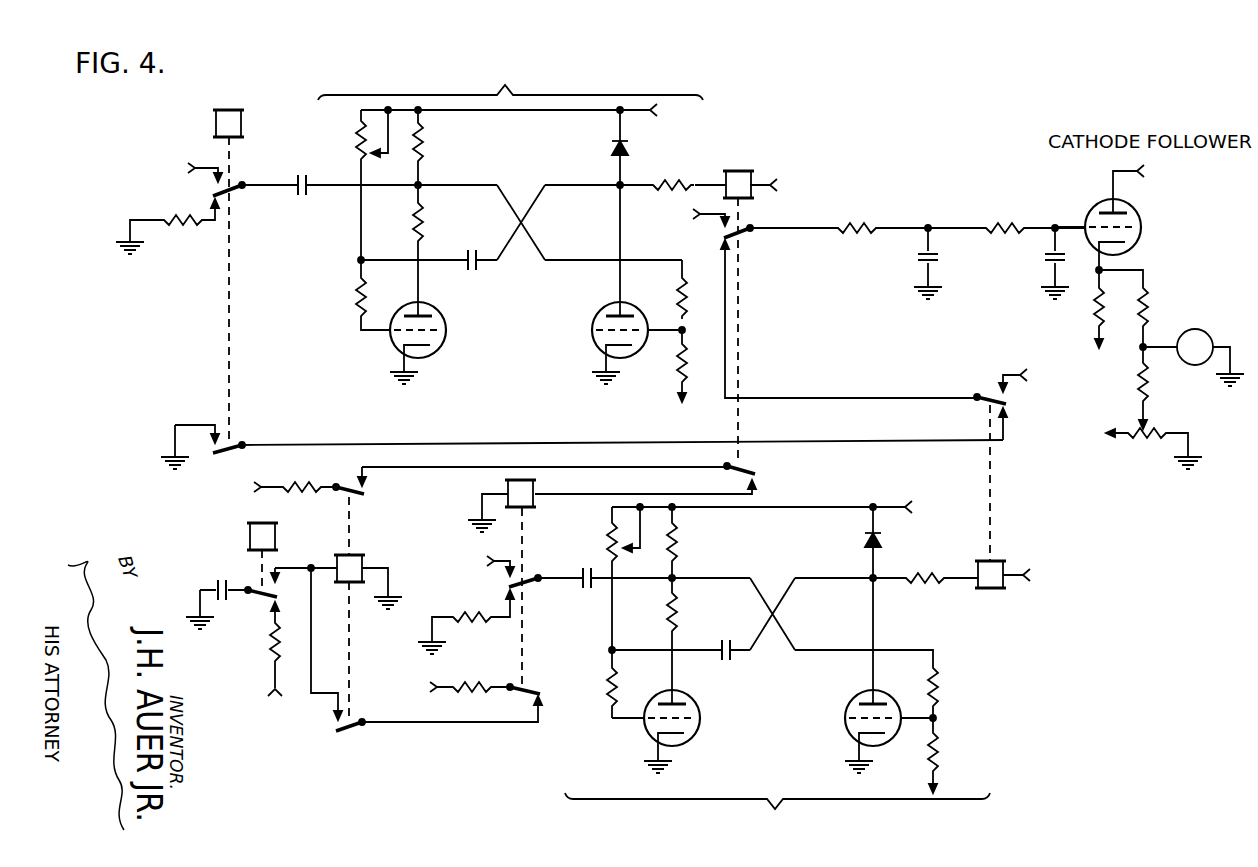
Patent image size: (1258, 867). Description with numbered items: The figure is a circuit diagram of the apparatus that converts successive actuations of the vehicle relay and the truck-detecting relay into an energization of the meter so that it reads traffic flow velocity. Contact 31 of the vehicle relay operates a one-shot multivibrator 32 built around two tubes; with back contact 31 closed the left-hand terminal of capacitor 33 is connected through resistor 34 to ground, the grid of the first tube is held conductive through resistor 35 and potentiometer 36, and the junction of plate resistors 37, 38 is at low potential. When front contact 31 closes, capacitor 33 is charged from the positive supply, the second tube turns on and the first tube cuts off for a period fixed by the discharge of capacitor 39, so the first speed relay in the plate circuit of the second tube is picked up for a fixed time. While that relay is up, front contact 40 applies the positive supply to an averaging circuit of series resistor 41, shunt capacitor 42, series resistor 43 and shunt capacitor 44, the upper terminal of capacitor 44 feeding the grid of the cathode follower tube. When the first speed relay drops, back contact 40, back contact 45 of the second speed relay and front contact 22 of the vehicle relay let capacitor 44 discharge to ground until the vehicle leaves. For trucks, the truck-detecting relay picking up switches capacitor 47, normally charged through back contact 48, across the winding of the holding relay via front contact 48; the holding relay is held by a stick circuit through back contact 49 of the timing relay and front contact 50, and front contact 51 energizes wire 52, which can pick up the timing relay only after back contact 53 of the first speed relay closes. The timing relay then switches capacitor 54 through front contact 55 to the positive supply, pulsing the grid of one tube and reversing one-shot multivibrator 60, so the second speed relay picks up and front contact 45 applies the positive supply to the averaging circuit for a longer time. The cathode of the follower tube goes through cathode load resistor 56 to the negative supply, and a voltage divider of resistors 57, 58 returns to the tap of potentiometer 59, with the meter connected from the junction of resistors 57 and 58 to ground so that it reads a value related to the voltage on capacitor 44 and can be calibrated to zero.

The front contact of relay VR 22 is at (245, 450).
The contact of relay VR 31 is at (238, 190).
The one-shot multivibrator 32 is at (516, 242).
The capacitor 33 is at (298, 180).
The resistor 34 is at (160, 222).
The resistor 35 is at (358, 290).
The potentiometer 36 is at (358, 150).
The plate resistor 37 is at (425, 225).
The plate resistor 38 is at (423, 149).
The capacitor 39 is at (479, 272).
The contact of relay SP1 40 is at (751, 233).
The series resistor 41 is at (863, 223).
The shunt capacitor 42 is at (915, 263).
The series resistor 43 is at (1004, 222).
The shunt capacitor 44 is at (1046, 262).
The contact of relay SP2 45 is at (976, 402).
The capacitor 47 is at (215, 583).
The contact of relay TD 48 is at (249, 586).
The back contact of relay HT 49 is at (531, 693).
The front contact of relay HM 50 is at (363, 727).
The front contact of relay HM 51 is at (363, 496).
The wire 52 is at (439, 469).
The back contact of relay SP1 53 is at (751, 470).
The capacitor 54 is at (586, 584).
The contact of relay HT 55 is at (535, 579).
The cathode load resistor 56 is at (1091, 312).
The resistor 57 is at (1151, 306).
The resistor 58 is at (1153, 393).
The potentiometer 59 is at (1147, 439).
The one-shot multivibrator 60 is at (777, 663).